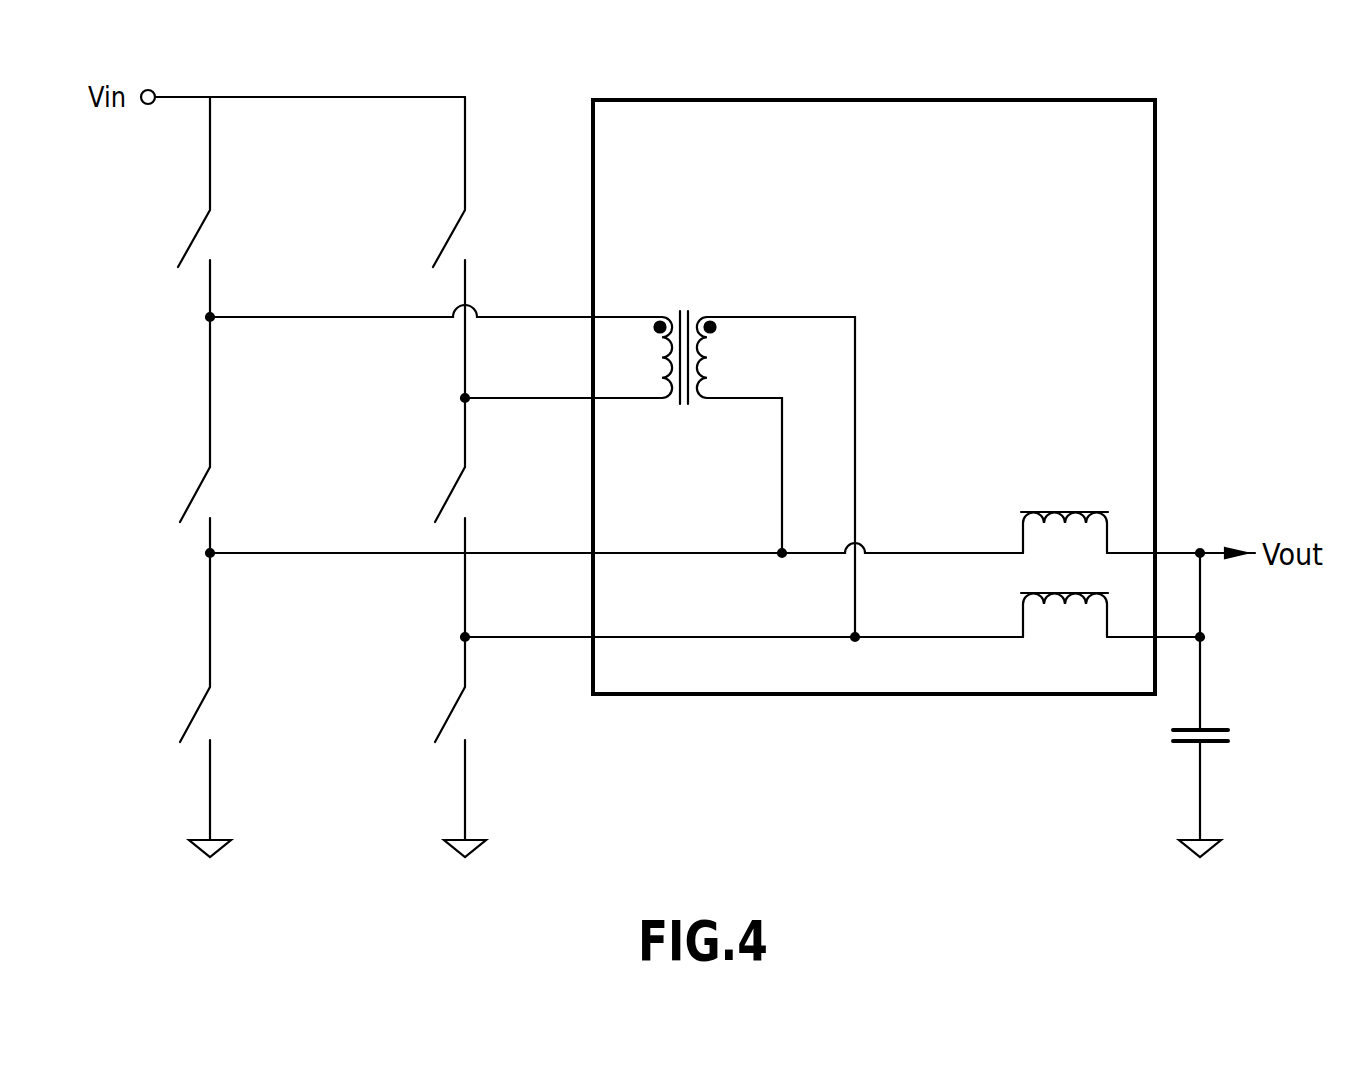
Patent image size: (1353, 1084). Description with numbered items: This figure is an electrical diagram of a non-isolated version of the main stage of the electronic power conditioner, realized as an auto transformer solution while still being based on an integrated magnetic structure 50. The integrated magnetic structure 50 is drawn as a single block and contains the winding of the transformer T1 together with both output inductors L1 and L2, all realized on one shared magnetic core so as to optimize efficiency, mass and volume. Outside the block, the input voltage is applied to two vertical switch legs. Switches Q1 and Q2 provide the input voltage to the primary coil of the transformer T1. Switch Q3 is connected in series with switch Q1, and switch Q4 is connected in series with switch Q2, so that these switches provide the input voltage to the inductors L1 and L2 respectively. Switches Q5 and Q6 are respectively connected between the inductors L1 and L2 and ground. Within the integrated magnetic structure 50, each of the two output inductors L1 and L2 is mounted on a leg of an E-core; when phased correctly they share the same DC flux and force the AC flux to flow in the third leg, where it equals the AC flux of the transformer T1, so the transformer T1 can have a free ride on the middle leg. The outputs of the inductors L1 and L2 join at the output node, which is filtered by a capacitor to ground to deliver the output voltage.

The integrated magnetic structure 50 is at (987, 100).
The switch Q1 is at (217, 238).
The switch Q2 is at (471, 238).
The switch Q3 is at (218, 494).
The switch Q4 is at (472, 494).
The switch Q5 is at (218, 714).
The switch Q6 is at (472, 714).
The main transformer T1 is at (685, 337).
The inductor L1 is at (1064, 512).
The inductor L2 is at (1064, 633).